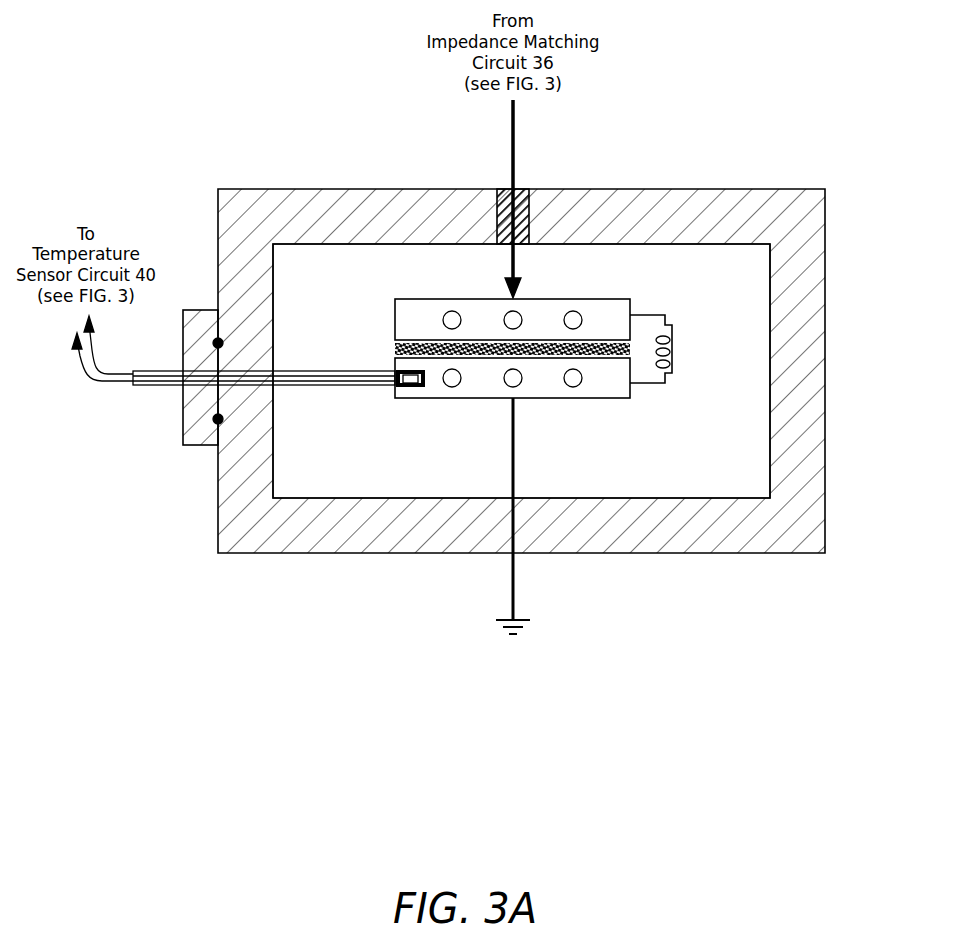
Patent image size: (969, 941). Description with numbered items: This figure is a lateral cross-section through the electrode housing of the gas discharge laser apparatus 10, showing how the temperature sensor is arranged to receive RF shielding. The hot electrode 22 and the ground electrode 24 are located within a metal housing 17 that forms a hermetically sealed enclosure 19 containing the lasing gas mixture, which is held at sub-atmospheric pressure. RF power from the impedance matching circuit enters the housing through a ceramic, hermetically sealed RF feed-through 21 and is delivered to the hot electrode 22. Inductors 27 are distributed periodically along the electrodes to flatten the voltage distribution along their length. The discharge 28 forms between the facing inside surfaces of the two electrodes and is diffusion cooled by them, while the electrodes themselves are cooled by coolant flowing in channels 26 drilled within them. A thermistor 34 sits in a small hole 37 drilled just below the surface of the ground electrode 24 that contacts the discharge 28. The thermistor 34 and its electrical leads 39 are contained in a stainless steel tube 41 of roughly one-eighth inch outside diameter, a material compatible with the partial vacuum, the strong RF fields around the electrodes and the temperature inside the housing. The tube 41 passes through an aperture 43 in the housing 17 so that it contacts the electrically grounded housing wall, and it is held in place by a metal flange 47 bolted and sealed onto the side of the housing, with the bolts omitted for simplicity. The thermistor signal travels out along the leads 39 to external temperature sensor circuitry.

The gas discharge laser apparatus 10 is at (580, 730).
The housing 17 is at (653, 553).
The hermetically sealed enclosure 19 is at (605, 468).
The RF feed-through 21 is at (496, 186).
The hot electrode 22 is at (458, 297).
The ground electrode 24 is at (613, 406).
The channels 26 is at (444, 314).
The inductors 27 is at (672, 342).
The discharge 28 is at (403, 351).
The thermistor 34 is at (400, 390).
The hole 37 is at (415, 390).
The electrical leads 39 is at (89, 345).
The stainless steel tube 41 is at (290, 387).
The aperture 43 is at (239, 387).
The metal flange 47 is at (190, 432).